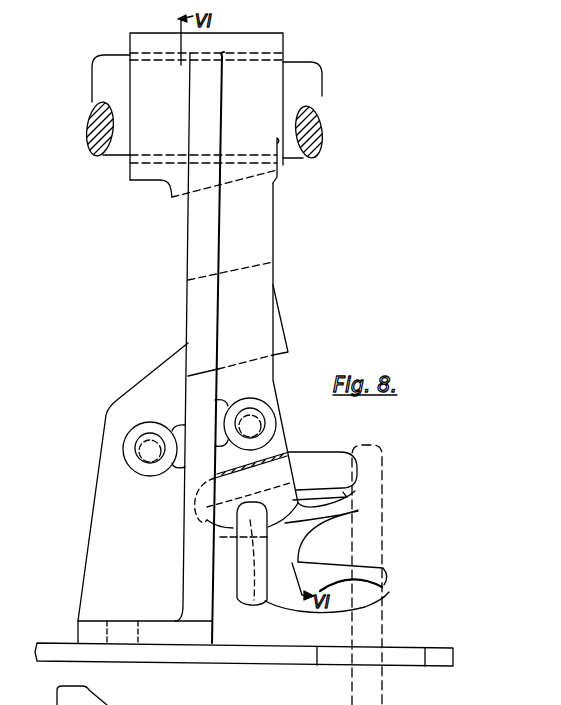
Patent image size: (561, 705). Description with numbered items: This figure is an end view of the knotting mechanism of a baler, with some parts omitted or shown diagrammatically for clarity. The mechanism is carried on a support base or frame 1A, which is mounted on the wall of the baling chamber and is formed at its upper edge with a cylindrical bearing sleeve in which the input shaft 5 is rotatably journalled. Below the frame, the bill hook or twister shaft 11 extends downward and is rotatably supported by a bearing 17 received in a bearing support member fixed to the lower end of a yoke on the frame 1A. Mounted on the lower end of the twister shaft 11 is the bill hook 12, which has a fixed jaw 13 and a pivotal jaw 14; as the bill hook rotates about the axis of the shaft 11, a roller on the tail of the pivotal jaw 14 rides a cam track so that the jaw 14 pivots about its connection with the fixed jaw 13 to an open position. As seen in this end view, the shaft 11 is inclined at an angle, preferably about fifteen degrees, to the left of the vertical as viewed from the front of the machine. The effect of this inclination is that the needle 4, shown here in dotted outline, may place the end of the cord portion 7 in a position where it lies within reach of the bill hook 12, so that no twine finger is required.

The support frame 1A is at (194, 241).
The needle 4 is at (382, 558).
The input shaft 5 is at (293, 70).
The cord portion 7 is at (370, 523).
The twister shaft 11 is at (255, 305).
The bill hook 12 is at (392, 583).
The fixed jaw 13 is at (337, 612).
The pivotal jaw 14 is at (323, 563).
The bearing 17 is at (307, 462).